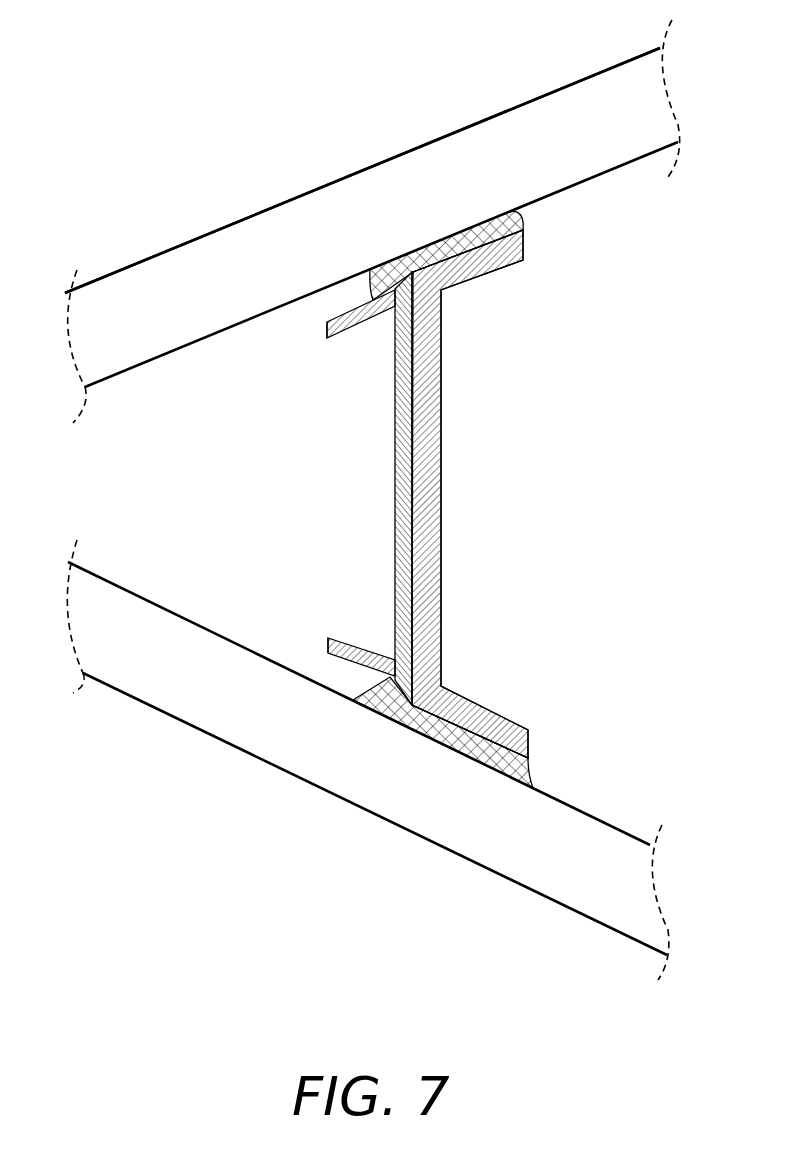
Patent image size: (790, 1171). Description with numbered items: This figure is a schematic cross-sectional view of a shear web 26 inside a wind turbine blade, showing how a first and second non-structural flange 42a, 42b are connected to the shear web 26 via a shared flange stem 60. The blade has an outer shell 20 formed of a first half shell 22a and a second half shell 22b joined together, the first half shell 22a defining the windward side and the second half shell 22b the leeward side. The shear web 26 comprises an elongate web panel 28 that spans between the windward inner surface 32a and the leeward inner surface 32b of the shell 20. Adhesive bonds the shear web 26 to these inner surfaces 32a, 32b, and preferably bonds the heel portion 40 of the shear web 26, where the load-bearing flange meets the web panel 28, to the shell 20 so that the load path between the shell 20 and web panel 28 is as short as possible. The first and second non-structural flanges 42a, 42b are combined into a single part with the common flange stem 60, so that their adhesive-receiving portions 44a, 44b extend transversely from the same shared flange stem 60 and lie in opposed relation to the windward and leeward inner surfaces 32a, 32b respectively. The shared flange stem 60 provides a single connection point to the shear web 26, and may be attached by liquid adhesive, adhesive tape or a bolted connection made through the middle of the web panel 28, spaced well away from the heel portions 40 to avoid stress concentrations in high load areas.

The outer shell 20 is at (230, 204).
The first half shell 22a is at (473, 147).
The second half shell 22b is at (417, 808).
The shear web 26 is at (493, 442).
The web panel 28 is at (434, 517).
The windward inner surface 32a is at (177, 347).
The leeward inner surface 32b is at (180, 612).
The heel portion 40 is at (428, 254).
The first non-structural flange 42a is at (374, 357).
The second non-structural flange 42b is at (374, 633).
The adhesive-receiving portion 44a is at (358, 331).
The adhesive-receiving portion 44b is at (350, 641).
The shared flange stem 60 is at (397, 485).